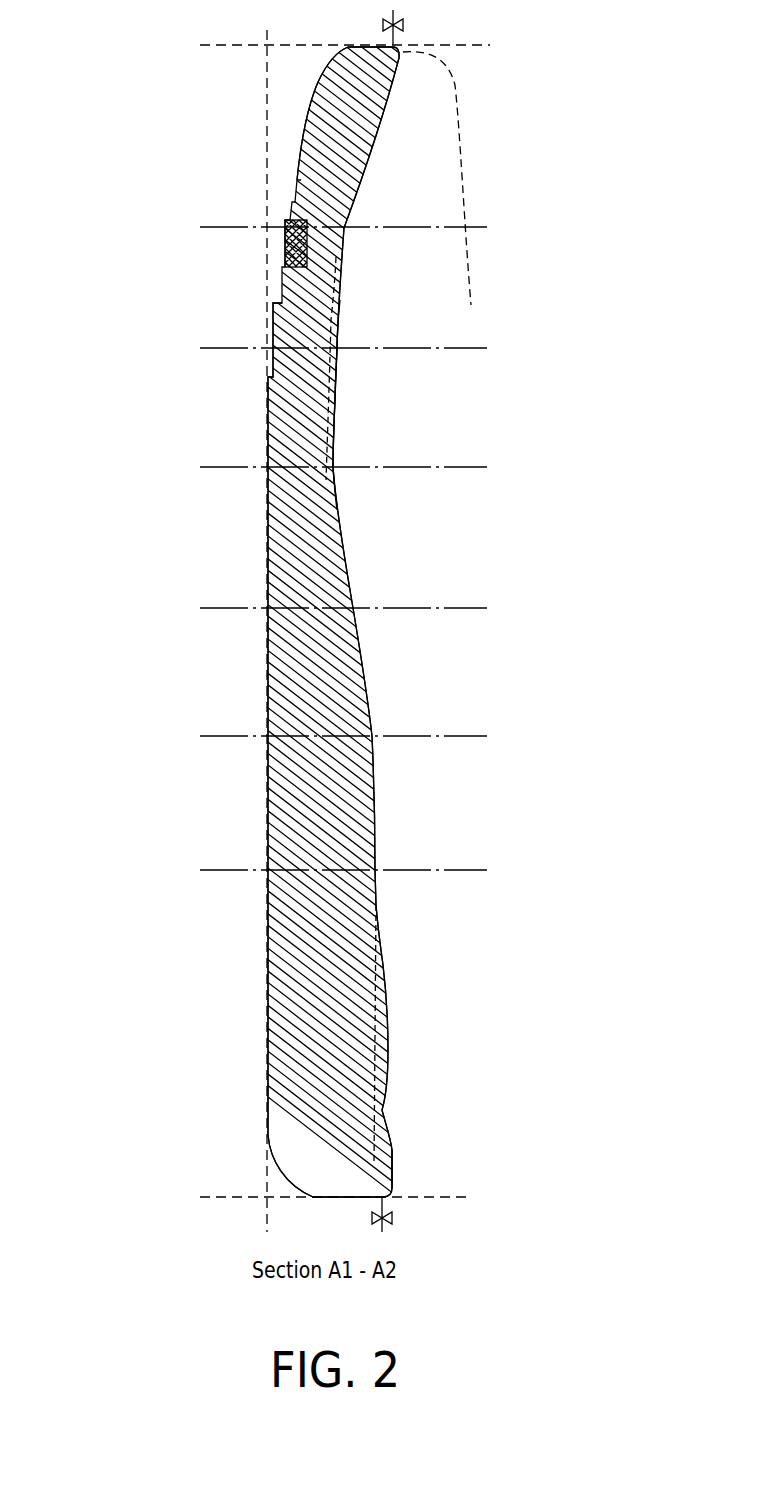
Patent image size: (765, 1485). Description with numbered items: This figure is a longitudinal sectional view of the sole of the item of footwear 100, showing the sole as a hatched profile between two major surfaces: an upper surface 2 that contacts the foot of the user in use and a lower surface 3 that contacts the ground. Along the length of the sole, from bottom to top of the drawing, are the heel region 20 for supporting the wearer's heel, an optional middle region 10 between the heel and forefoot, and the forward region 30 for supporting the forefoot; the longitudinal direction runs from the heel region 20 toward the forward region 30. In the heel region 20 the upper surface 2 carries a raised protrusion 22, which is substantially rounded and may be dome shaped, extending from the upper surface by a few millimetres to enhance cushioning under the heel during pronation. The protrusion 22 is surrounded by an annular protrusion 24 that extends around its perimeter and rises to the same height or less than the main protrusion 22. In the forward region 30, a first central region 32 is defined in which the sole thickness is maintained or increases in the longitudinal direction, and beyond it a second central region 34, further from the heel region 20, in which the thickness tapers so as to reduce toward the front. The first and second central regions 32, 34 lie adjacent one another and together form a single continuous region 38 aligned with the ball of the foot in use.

The item of footwear 100 is at (157, 163).
The upper surface 2 is at (345, 561).
The lower surface 3 is at (268, 538).
The middle region 10 is at (468, 638).
The heel region 20 is at (443, 1046).
The raised protrusion 22 is at (380, 967).
The annular protrusion 24 is at (392, 1151).
The forward region 30 is at (470, 378).
The first central region 32 is at (333, 441).
The second central region 34 is at (342, 272).
The single continuous region 38 is at (337, 340).